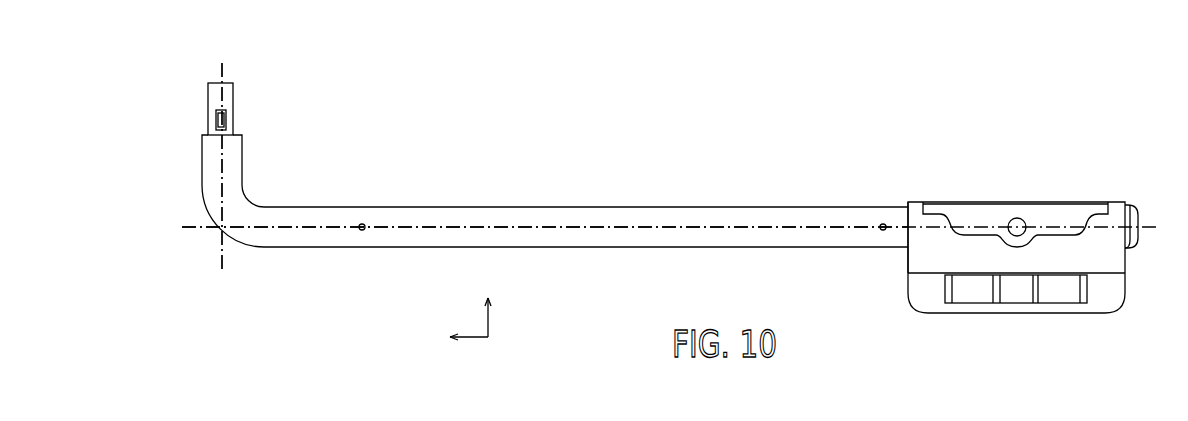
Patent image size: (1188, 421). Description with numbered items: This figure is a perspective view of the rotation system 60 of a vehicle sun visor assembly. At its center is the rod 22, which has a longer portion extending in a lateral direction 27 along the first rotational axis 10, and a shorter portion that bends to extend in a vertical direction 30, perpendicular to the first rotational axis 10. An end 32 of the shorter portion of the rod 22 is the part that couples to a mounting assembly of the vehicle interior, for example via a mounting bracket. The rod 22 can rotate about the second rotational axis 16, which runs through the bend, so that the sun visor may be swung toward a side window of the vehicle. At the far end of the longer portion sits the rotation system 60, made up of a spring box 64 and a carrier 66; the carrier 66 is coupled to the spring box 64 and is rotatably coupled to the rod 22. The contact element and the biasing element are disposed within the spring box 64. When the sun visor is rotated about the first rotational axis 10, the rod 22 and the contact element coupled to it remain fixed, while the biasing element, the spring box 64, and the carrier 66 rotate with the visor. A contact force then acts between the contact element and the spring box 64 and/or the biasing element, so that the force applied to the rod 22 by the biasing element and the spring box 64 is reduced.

The first rotational axis 10 is at (288, 227).
The second rotational axis 16 is at (222, 247).
The rod 22 is at (512, 187).
The lateral direction 27 is at (472, 333).
The vertical direction 30 is at (490, 318).
The end 32 is at (222, 80).
The rotation system 60 is at (1003, 265).
The spring box 64 is at (977, 214).
The carrier 66 is at (917, 258).